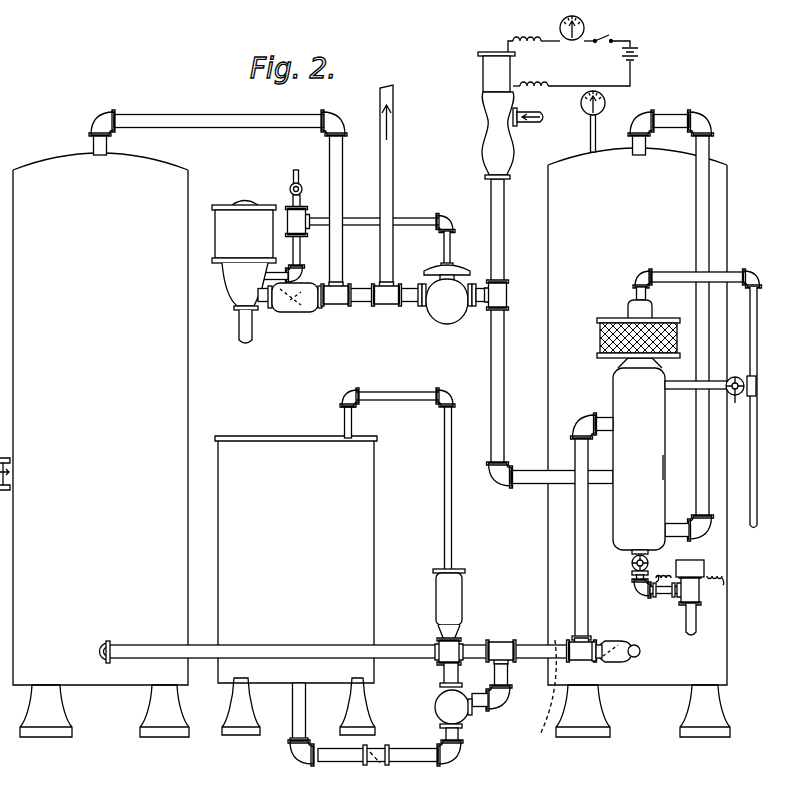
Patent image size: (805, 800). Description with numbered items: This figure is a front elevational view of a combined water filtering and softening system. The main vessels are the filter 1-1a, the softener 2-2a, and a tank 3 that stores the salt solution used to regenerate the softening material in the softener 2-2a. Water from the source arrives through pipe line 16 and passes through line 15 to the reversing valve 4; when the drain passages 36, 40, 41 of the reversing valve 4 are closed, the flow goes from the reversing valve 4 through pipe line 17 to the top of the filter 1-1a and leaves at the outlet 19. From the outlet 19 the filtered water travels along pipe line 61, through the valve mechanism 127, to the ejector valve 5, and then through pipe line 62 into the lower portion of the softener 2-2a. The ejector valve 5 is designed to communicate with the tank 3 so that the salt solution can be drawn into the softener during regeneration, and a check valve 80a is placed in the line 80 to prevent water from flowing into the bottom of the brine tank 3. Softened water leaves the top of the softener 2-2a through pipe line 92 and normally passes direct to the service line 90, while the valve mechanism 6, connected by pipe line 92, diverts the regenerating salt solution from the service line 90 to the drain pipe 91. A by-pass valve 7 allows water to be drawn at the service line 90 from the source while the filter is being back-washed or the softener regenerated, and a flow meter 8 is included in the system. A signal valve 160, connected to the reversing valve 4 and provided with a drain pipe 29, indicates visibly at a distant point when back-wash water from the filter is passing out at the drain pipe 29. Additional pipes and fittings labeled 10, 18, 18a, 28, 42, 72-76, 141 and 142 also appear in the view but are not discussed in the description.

The filter 1-1a is at (727, 216).
The softener 2-2a is at (187, 392).
The tank 3 is at (376, 580).
The reversing valve 4 is at (656, 397).
The ejector valve 5 is at (437, 706).
The valve mechanism 6 is at (217, 212).
The valve 7 is at (452, 262).
The flow meter 8 is at (483, 75).
The casing 10 is at (659, 467).
The line 15 is at (540, 487).
The pipe line 16 is at (532, 124).
The pipe line 17 is at (709, 177).
The pipe 18 is at (588, 577).
The pipe 18a is at (532, 697).
The outlet 19 is at (641, 652).
The valve 28 is at (650, 560).
The drain pipe 29 is at (694, 628).
The drain passage 36 is at (737, 279).
The drain passage 40 is at (598, 348).
The drain passage 41 is at (742, 383).
The valve stem 42 is at (736, 398).
The pipe line 61 is at (532, 661).
The pipe line 62 is at (257, 645).
The pipe 72-76 is at (383, 391).
The pipe 80 is at (318, 758).
The check valve 80a is at (378, 762).
The service line 90 is at (392, 188).
The drain pipe 91 is at (253, 330).
The pipe line 92 is at (171, 115).
The valve mechanism 127 is at (303, 308).
The pipe 141 is at (349, 220).
The valve 142 is at (291, 185).
The signal valve 160 is at (694, 594).